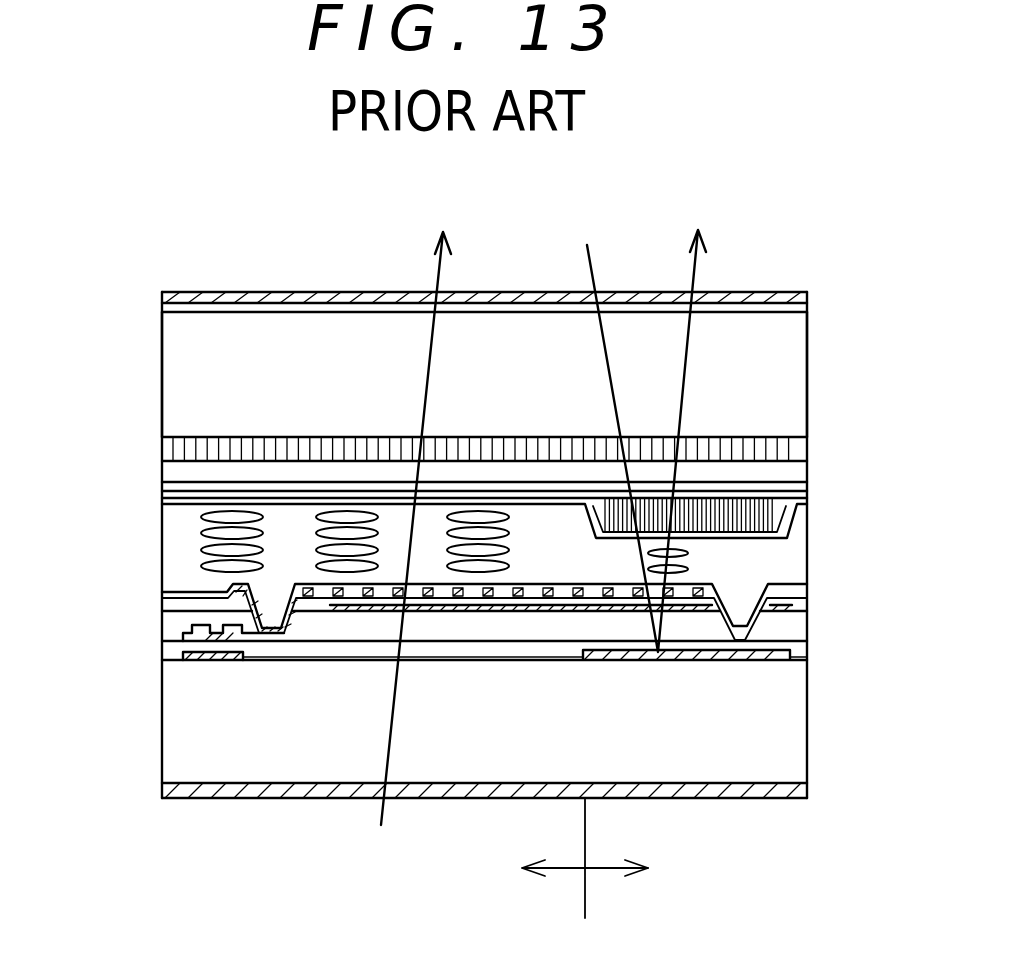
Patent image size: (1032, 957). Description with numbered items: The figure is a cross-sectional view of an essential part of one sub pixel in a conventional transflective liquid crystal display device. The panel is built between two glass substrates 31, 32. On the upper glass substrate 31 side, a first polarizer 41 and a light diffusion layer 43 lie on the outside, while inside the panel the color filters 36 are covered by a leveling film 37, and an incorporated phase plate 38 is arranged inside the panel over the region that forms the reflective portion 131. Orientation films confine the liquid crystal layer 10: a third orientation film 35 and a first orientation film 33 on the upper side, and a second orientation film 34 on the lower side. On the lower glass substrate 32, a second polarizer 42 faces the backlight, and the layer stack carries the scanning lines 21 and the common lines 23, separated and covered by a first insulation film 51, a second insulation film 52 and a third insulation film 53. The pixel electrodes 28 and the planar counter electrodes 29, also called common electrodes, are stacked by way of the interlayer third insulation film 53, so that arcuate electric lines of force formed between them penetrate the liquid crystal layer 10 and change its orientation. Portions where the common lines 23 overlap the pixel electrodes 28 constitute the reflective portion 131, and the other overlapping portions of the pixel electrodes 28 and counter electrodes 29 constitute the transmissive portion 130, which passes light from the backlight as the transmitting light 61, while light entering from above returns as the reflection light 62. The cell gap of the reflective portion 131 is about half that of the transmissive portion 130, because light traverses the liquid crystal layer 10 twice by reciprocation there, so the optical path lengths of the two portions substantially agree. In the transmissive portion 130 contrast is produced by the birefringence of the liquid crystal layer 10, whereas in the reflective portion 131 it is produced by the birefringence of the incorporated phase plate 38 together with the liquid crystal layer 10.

The first polarizer 41 is at (166, 293).
The light diffusion layer 43 is at (166, 309).
The glass substrate 31 is at (180, 372).
The color filters 36 is at (168, 450).
The leveling film 37 is at (168, 471).
The third orientation film 35 is at (168, 490).
The first orientation film 33 is at (168, 498).
The incorporated phase plate 38 is at (775, 520).
The liquid crystal layer 10 is at (692, 572).
The second orientation film 34 is at (172, 596).
The pixel electrodes 28 is at (492, 612).
The counter electrodes 29 is at (365, 612).
The third insulation film 53 is at (172, 607).
The second insulation film 52 is at (170, 627).
The first insulation film 51 is at (172, 649).
The scanning lines 21 is at (210, 661).
The common lines 23 is at (645, 660).
The glass substrate 32 is at (168, 730).
The second polarizer 42 is at (165, 790).
The transmitting light 61 is at (421, 505).
The reflection light 62 is at (650, 416).
The transmissive portion 130 is at (548, 858).
The reflective portion 131 is at (670, 867).